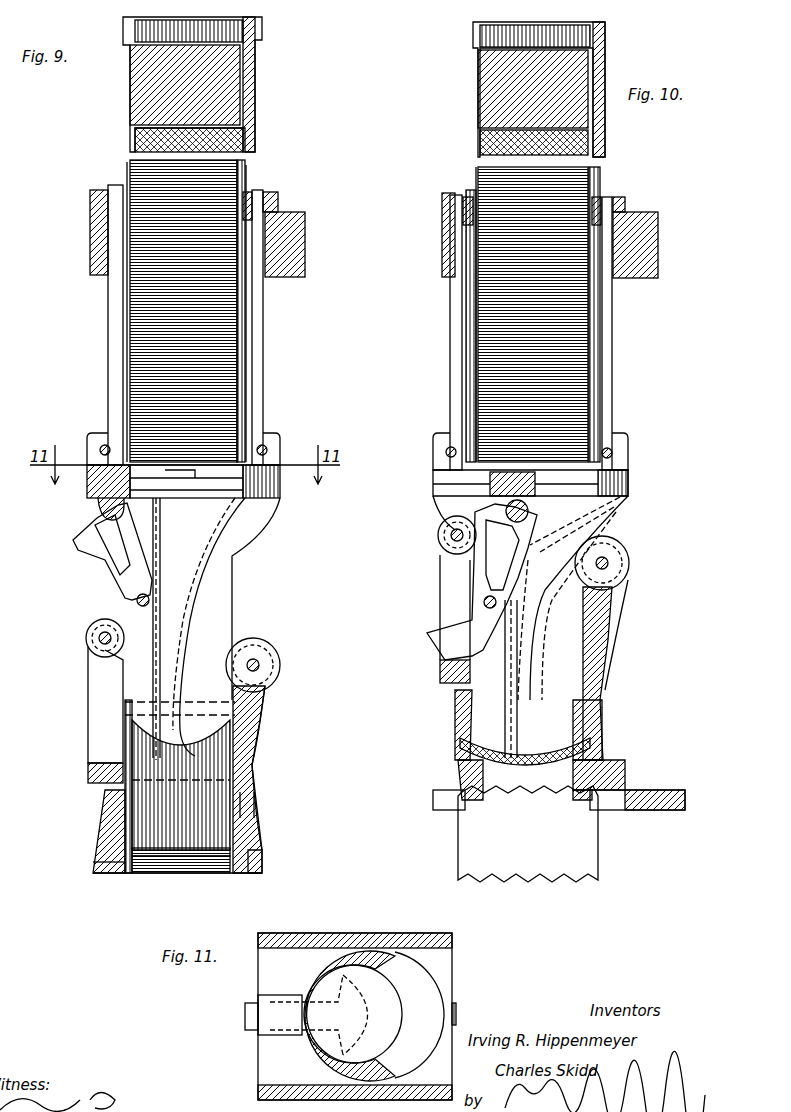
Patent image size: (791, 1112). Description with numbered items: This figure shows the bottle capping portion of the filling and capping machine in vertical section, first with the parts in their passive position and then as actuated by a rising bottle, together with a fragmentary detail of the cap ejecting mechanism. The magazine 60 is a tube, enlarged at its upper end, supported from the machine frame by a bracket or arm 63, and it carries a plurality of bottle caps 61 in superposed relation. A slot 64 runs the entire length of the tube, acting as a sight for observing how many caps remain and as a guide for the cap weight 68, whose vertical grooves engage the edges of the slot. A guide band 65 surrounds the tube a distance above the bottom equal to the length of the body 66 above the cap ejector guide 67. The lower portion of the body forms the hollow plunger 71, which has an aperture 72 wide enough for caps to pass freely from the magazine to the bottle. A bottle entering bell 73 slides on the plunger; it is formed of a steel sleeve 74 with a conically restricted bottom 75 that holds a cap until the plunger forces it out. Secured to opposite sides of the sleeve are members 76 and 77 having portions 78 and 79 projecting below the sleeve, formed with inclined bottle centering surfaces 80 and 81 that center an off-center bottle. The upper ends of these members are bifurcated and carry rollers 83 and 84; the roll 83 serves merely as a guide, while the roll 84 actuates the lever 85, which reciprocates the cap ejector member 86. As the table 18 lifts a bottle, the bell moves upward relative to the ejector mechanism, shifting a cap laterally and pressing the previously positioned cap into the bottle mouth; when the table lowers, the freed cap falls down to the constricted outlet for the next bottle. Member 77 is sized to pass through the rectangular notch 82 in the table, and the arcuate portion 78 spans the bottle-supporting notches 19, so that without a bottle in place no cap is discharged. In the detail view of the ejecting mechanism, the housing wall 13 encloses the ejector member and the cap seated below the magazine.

In FIG. 9, the magazine 60 is at (252, 105).
In FIG. 10, the magazine 60 is at (597, 118).
In FIG. 9, the cap weight 68 is at (165, 85).
In FIG. 10, the cap weight 68 is at (490, 95).
In FIG. 9, the bottle caps 61 is at (250, 160).
In FIG. 10, the bottle caps 61 is at (595, 180).
In FIG. 11, the bottle caps 61 is at (353, 1014).
In FIG. 9, the slot 64 is at (130, 165).
In FIG. 10, the slot 64 is at (472, 185).
In FIG. 9, the guide band 65 is at (266, 192).
In FIG. 10, the guide band 65 is at (615, 199).
In FIG. 9, the bracket or arm 63 is at (296, 278).
In FIG. 9, the body 66 is at (263, 368).
In FIG. 10, the body 66 is at (452, 372).
In FIG. 9, the cap ejector member 86 is at (92, 487).
In FIG. 10, the cap ejector member 86 is at (488, 480).
In FIG. 11, the cap ejector member 86 is at (272, 1008).
In FIG. 9, the cap ejector guide 67 is at (280, 503).
In FIG. 10, the cap ejector guide 67 is at (630, 503).
In FIG. 11, the cap ejector guide 67 is at (440, 978).
In FIG. 9, the lever 85 is at (112, 572).
In FIG. 10, the lever 85 is at (483, 560).
In FIG. 11, the lever 85 is at (250, 1018).
In FIG. 9, the roller 84 is at (90, 628).
In FIG. 10, the roller 84 is at (440, 530).
In FIG. 9, the aperture 72 is at (185, 582).
In FIG. 10, the aperture 72 is at (528, 590).
In FIG. 9, the roller 83 is at (272, 650).
In FIG. 10, the roller 83 is at (628, 560).
In FIG. 11, the roller 83 is at (458, 1015).
In FIG. 9, the hollow plunger 71 is at (205, 732).
In FIG. 10, the hollow plunger 71 is at (505, 735).
In FIG. 9, the steel sleeve 74 is at (245, 770).
In FIG. 10, the steel sleeve 74 is at (608, 650).
In FIG. 9, the bottle entering bell 73 is at (269, 768).
In FIG. 10, the bottle entering bell 73 is at (616, 638).
In FIG. 9, the member 76 is at (257, 810).
In FIG. 10, the member 76 is at (608, 722).
In FIG. 9, the conically restricted bottom 75 is at (220, 845).
In FIG. 9, the member 77 is at (107, 815).
In FIG. 10, the member 77 is at (455, 722).
In FIG. 9, the portion 78 is at (262, 862).
In FIG. 10, the portion 78 is at (610, 760).
In FIG. 9, the portion 79 is at (102, 868).
In FIG. 10, the portion 79 is at (455, 770).
In FIG. 9, the inclined bottle centering surface 81 is at (122, 874).
In FIG. 10, the inclined bottle centering surface 81 is at (458, 790).
In FIG. 9, the inclined bottle centering surface 80 is at (250, 877).
In FIG. 10, the inclined bottle centering surface 80 is at (588, 778).
In FIG. 10, the rectangular notch 82 is at (622, 790).
In FIG. 10, the table 18 is at (670, 812).
In FIG. 10, the bottle-supporting notches 19 is at (590, 812).
In FIG. 11, the housing wall 13 is at (360, 933).